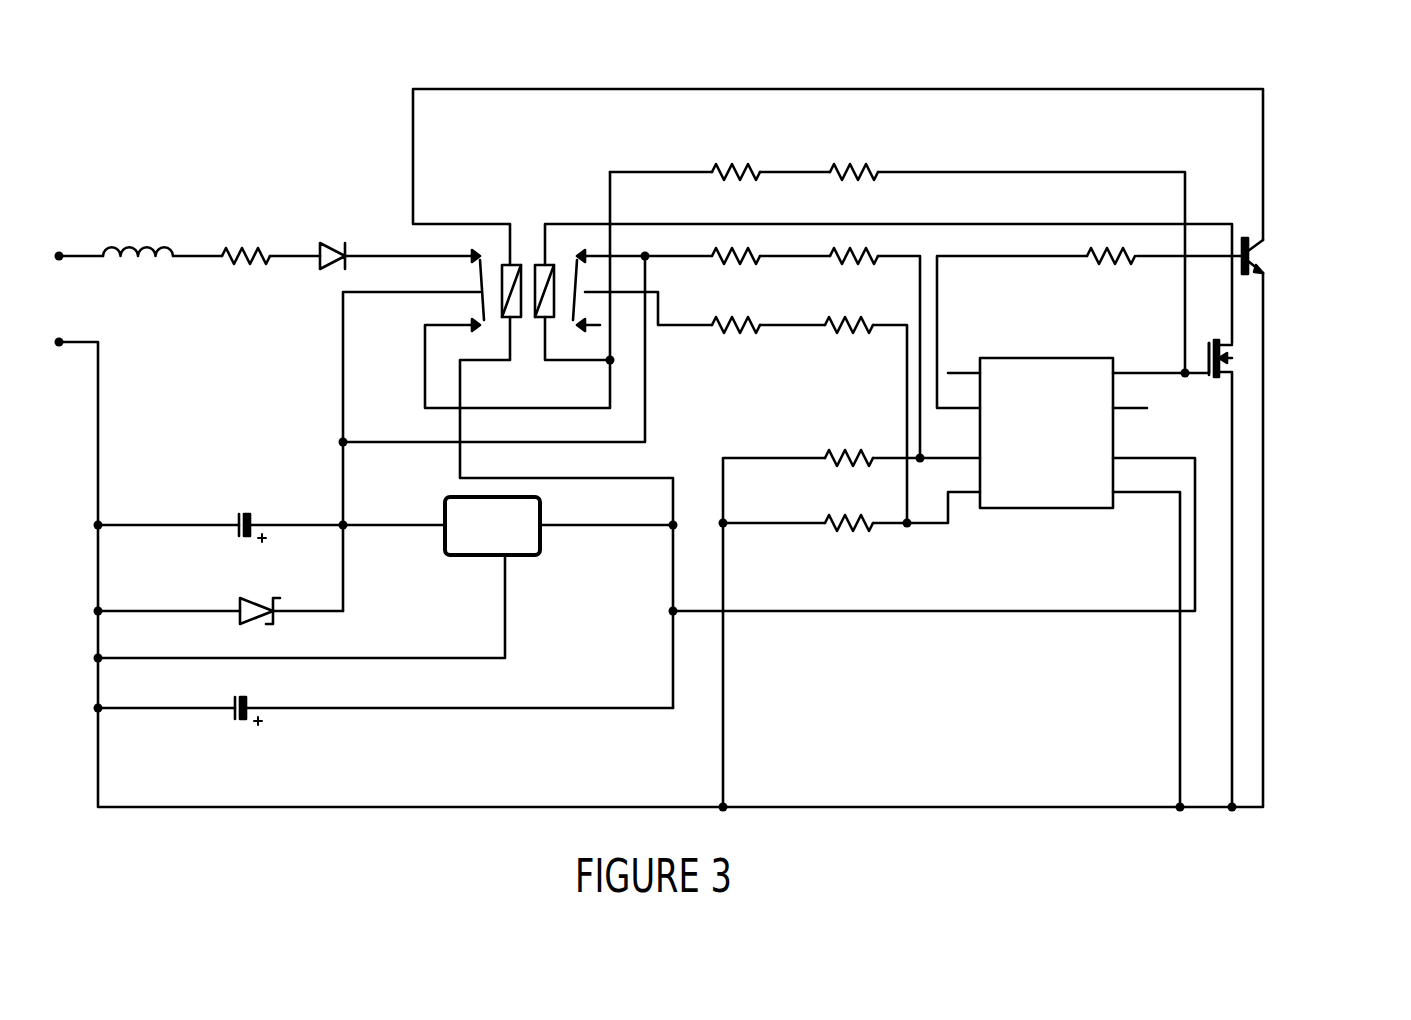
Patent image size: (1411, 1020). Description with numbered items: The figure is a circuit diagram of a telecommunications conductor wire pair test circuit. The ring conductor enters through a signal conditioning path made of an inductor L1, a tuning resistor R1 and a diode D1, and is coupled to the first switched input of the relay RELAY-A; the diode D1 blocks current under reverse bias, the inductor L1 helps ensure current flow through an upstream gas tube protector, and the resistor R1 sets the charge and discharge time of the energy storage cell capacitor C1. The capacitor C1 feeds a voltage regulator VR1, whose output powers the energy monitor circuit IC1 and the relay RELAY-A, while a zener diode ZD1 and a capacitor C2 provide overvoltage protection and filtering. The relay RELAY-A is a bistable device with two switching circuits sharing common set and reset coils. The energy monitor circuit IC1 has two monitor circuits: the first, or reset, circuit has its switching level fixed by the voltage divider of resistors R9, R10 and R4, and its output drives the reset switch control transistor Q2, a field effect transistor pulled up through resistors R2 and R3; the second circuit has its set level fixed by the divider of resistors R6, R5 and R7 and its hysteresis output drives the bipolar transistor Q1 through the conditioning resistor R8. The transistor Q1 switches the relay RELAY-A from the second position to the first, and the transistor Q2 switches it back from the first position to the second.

The inductor L1 is at (136, 254).
The tuning resistor R1 is at (239, 254).
The diode D1 is at (308, 252).
The relay RELAY-A is at (519, 292).
The pull up resistor R2 is at (735, 169).
The pull up resistor R3 is at (853, 169).
The resistor R9 is at (735, 253).
The resistor R10 is at (852, 253).
The resistor R6 is at (734, 322).
The resistor R5 is at (847, 322).
The resistor R4 is at (850, 458).
The resistor R7 is at (850, 523).
The resistor R8 is at (1109, 253).
The transistor Q1 is at (1325, 250).
The reset switch control transistor Q2 is at (1178, 366).
The energy monitor circuit IC1 is at (1047, 440).
The energy storage cell capacitor C1 is at (265, 527).
The zener diode ZD1 is at (253, 613).
The voltage regulator VR1 is at (546, 563).
The capacitor C2 is at (264, 709).